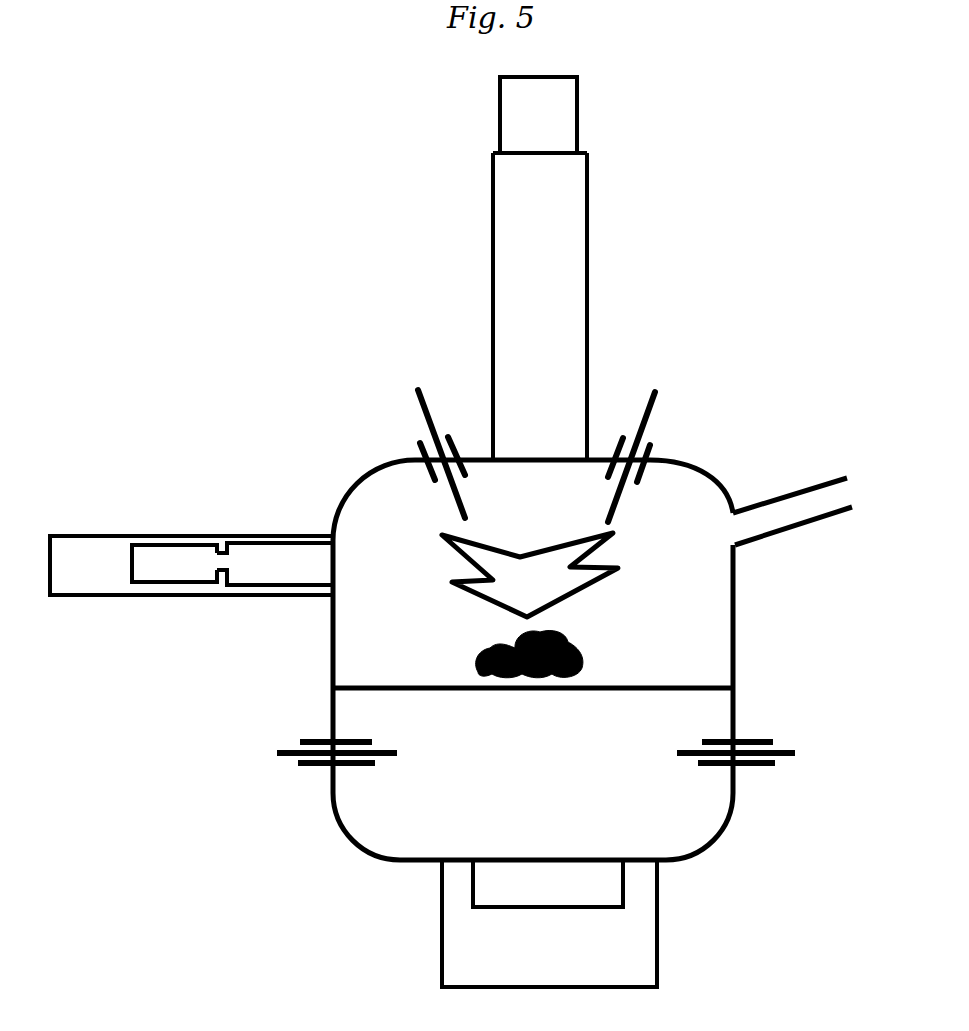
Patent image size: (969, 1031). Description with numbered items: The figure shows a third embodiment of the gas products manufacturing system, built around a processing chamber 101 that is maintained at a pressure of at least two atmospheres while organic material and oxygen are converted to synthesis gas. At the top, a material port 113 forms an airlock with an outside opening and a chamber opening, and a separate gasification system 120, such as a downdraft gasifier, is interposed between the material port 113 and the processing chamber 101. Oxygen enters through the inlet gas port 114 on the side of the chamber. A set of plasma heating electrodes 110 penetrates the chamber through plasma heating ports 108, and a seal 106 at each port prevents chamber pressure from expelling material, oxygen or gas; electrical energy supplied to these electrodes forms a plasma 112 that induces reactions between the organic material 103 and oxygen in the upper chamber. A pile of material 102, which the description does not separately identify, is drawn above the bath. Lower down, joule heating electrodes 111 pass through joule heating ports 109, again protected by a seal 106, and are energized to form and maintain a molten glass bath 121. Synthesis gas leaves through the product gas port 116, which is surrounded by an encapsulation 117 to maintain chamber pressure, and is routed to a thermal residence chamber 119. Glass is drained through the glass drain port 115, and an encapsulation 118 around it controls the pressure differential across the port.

The processing chamber 101 is at (533, 660).
The material to be treated 102 is at (577, 652).
The organic material 103 is at (538, 495).
The seal 106 is at (443, 436).
The plasma heating ports 108 is at (420, 446).
The joule heating ports 109 is at (313, 740).
The plasma heating electrodes 110 is at (420, 392).
The joule heating electrodes 111 is at (280, 752).
The plasma 112 is at (530, 575).
The material port 113 is at (538, 115).
The inlet gas port 114 is at (814, 511).
The glass drain port 115 is at (548, 883).
The product gas port 116 is at (275, 564).
The encapsulation 117 is at (191, 565).
The encapsulation 118 is at (549, 923).
The thermal residence chamber 119 is at (174, 563).
The separate gasification system 120 is at (540, 306).
The molten glass bath 121 is at (534, 736).